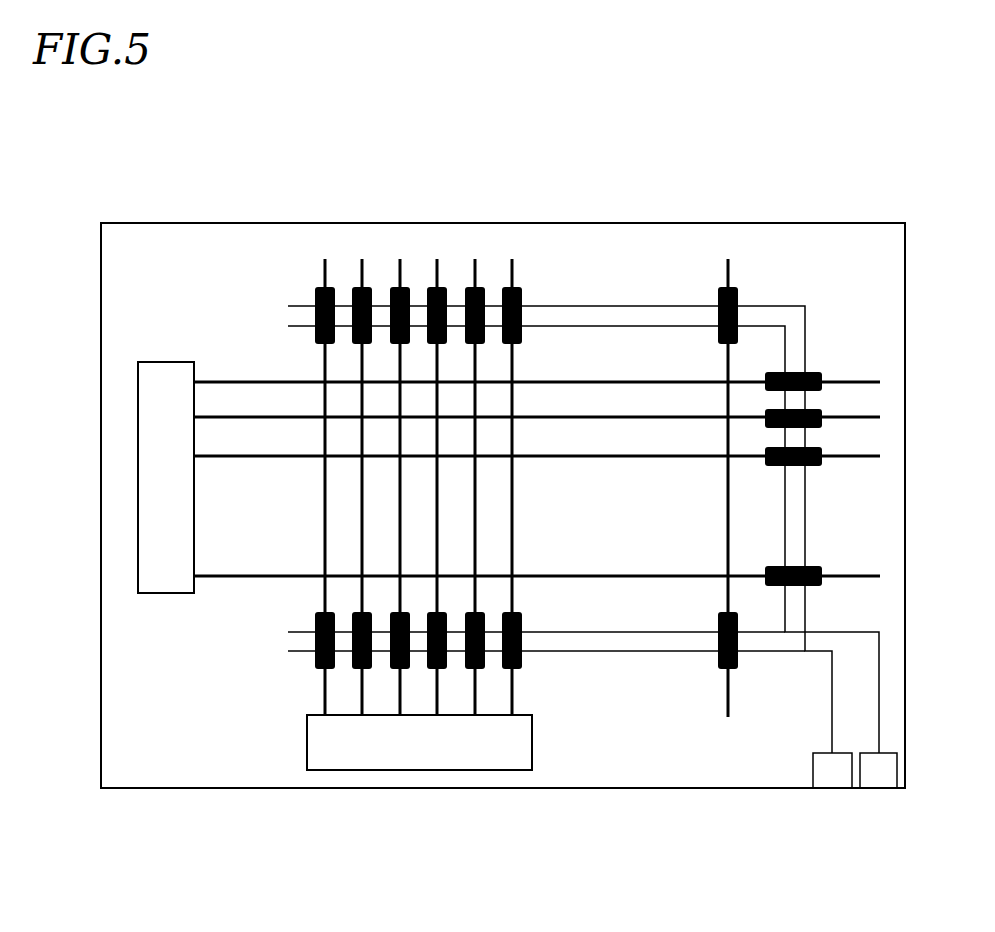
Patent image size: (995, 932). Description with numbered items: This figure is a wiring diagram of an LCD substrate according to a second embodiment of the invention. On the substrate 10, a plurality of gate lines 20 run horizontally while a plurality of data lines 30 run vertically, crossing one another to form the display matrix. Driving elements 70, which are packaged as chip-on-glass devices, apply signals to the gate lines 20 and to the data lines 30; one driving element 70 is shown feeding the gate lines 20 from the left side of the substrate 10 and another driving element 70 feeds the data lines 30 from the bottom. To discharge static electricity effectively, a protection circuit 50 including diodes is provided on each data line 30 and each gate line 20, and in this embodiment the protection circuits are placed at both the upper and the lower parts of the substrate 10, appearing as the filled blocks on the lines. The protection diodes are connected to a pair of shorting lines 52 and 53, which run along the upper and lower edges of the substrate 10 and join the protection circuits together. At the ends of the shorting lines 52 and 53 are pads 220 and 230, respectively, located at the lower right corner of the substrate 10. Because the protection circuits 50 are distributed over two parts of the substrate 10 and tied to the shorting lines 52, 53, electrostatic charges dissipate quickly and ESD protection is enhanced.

The substrate 10 is at (476, 505).
The gate line 20 is at (537, 434).
The data line 30 is at (484, 488).
The protection circuit 50 is at (813, 437).
The shorting line 52 is at (583, 539).
The shorting line 53 is at (560, 529).
The driving element 70 is at (335, 566).
The pad 220 is at (820, 818).
The pad 230 is at (880, 818).